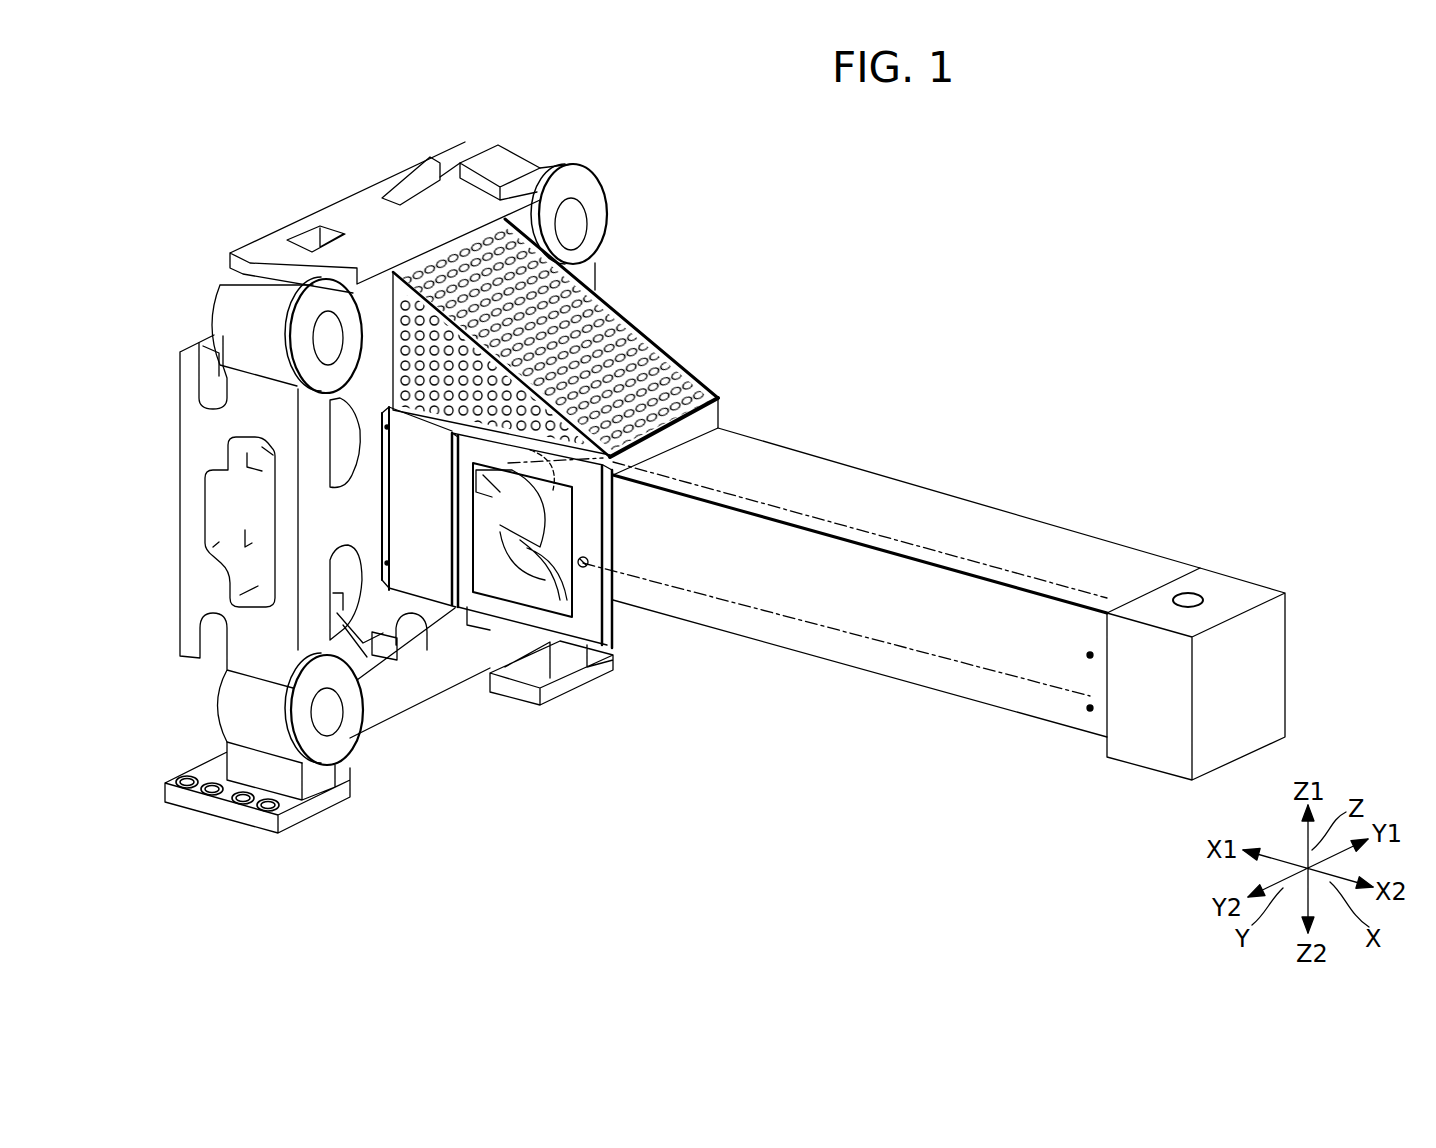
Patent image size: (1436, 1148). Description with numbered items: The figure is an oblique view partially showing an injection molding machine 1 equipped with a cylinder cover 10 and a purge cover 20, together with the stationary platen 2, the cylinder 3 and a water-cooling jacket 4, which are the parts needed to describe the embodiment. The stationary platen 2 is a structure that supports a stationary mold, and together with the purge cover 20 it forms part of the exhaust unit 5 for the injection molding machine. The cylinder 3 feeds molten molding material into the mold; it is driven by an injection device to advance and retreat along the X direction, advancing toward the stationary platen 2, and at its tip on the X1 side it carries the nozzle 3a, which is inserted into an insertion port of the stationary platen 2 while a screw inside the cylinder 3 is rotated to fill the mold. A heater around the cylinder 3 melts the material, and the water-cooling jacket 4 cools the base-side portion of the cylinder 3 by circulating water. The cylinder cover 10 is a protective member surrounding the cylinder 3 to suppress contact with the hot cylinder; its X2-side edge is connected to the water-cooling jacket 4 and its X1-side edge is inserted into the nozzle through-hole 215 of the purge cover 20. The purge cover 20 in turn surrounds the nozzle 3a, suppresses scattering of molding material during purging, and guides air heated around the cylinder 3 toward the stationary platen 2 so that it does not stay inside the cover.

The injection molding machine 1 is at (1078, 280).
The stationary platen 2 is at (497, 200).
The cylinder 3 is at (893, 540).
The nozzle 3a is at (497, 490).
The water-cooling jacket 4 is at (1227, 587).
The exhaust unit for injection molding machine 5 is at (740, 98).
The cylinder cover 10 is at (1095, 522).
The purge cover 20 is at (660, 322).
The nozzle through-hole 215 is at (735, 418).